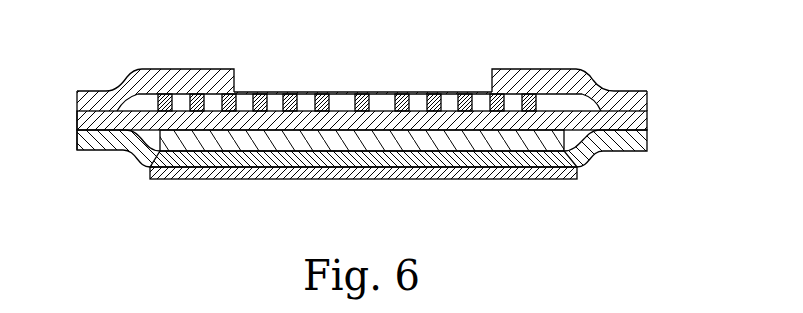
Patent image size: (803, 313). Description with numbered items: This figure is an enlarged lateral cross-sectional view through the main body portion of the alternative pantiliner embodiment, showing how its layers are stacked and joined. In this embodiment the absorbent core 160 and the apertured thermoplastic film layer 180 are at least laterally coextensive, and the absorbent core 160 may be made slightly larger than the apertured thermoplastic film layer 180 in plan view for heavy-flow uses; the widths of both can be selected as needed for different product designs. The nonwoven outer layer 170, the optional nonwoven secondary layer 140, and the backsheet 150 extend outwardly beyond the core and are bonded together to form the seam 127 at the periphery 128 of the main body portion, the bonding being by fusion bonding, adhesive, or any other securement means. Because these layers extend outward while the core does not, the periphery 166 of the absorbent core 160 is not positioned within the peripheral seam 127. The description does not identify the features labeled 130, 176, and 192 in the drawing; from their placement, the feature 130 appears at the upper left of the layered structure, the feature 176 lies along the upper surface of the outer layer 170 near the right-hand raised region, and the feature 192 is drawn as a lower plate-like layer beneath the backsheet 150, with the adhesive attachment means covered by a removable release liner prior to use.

The upper flexible circuit layer 130 is at (110, 89).
The nonwoven outer layer 170 is at (200, 69).
The top surface of standoff 176 is at (545, 69).
The periphery 128 is at (650, 100).
The apertured thermoplastic film layer 180 is at (345, 91).
The nonwoven secondary layer 140 is at (215, 123).
The absorbent core 160 is at (378, 143).
The periphery of the absorbent core 166 is at (122, 153).
The seam 127 is at (633, 153).
The backsheet 150 is at (485, 160).
The base plate 192 is at (280, 180).